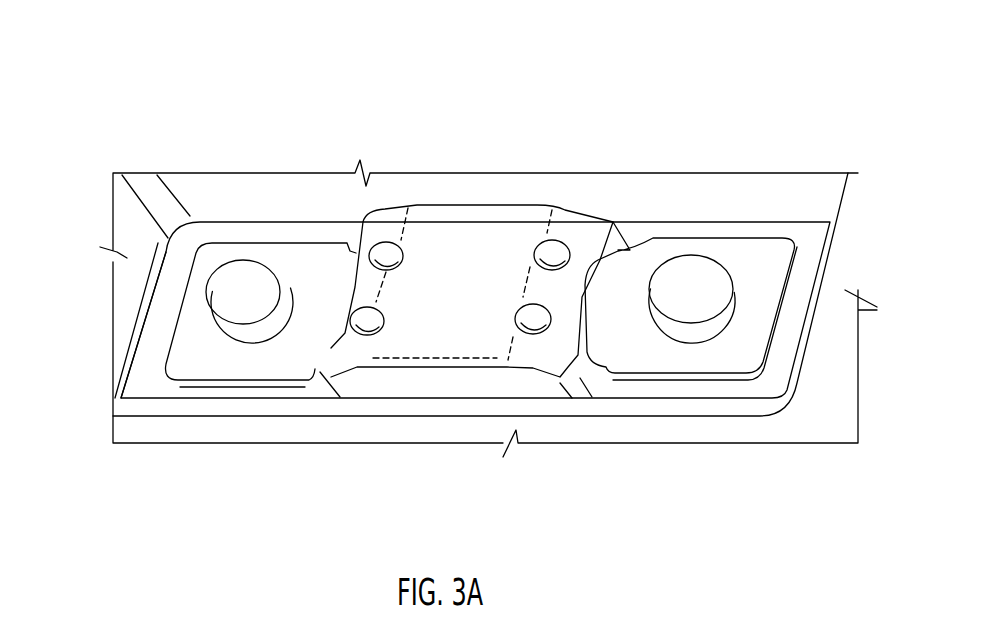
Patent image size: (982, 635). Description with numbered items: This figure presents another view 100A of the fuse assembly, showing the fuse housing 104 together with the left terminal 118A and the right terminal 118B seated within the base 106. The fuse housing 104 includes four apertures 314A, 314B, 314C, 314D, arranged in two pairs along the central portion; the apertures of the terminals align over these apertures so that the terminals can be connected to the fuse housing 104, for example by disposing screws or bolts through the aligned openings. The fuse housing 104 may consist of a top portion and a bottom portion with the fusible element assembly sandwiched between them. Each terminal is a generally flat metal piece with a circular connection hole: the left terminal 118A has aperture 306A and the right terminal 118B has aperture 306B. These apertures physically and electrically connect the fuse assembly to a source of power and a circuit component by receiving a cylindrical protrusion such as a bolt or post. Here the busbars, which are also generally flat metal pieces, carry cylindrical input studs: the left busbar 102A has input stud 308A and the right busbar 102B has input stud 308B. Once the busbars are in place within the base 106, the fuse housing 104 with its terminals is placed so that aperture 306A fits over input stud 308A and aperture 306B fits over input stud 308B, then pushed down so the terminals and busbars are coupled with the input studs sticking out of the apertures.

The view of the fuse housing and terminals 100A is at (140, 64).
The fuse housing 104 is at (477, 247).
The base 106 is at (830, 370).
The left busbar 102A is at (143, 373).
The right busbar 102B is at (772, 363).
The left terminal 118A is at (295, 265).
The right terminal 118B is at (655, 262).
The aperture 306A is at (275, 336).
The aperture 306B is at (661, 336).
The input stud 308A is at (230, 297).
The input stud 308B is at (693, 302).
The aperture 314A is at (393, 253).
The aperture 314B is at (370, 332).
The aperture 314C is at (553, 253).
The aperture 314D is at (534, 332).